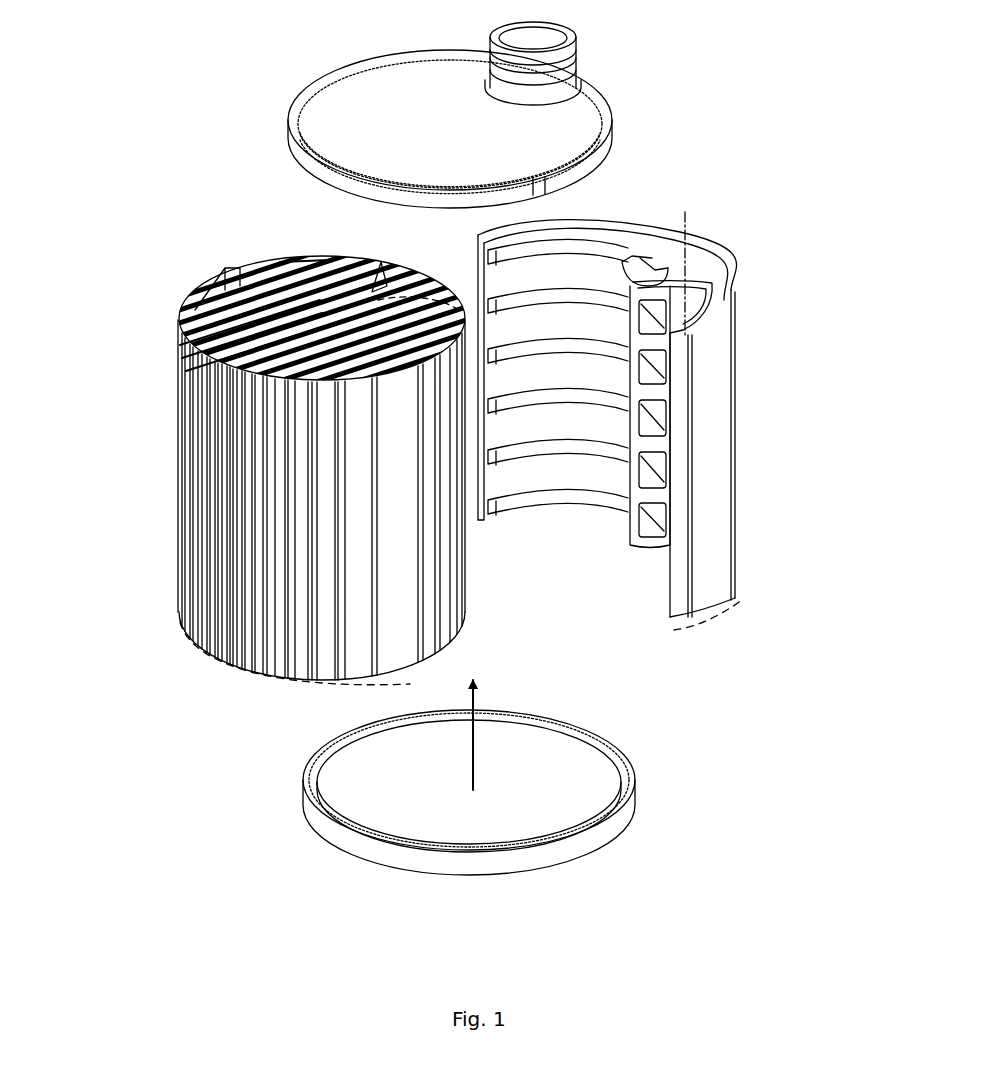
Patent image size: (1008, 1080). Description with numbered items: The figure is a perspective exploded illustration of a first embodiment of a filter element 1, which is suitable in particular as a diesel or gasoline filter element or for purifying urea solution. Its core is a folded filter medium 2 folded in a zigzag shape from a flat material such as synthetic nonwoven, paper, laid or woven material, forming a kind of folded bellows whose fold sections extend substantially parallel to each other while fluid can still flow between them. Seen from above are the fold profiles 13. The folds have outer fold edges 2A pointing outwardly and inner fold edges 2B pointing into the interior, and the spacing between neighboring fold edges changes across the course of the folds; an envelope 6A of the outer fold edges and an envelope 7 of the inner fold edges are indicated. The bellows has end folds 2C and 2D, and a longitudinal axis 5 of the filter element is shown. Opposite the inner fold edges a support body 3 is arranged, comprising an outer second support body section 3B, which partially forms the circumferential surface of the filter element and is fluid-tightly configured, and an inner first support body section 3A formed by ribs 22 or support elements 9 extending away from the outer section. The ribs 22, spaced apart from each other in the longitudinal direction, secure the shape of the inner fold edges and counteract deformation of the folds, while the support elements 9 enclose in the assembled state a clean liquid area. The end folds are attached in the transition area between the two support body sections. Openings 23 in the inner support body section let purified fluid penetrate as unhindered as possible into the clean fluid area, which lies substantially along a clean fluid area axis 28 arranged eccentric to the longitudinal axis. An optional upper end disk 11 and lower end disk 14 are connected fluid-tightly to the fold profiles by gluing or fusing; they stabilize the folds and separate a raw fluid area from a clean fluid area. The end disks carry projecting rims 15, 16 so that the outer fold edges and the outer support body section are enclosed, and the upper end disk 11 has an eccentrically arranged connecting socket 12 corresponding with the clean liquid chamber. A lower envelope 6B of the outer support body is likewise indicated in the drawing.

The filter element 1 is at (102, 429).
The folded filter medium 2 is at (243, 236).
The outer fold edges 2A is at (215, 366).
The inner fold edges 2B is at (380, 268).
The end fold 2C is at (232, 268).
The end fold 2D is at (430, 648).
The support body 3 is at (728, 169).
The first support body section 3A is at (635, 520).
The second support body section 3B is at (738, 268).
The longitudinal axis 5 is at (490, 714).
The envelope of the outer fold edges 6A is at (216, 656).
The bottom edge of shell 6B is at (740, 590).
The envelope of the inner fold edges 7 is at (418, 296).
The support elements 9 is at (648, 258).
The upper end disk 11 is at (318, 92).
The connecting socket 12 is at (578, 50).
The fold profiles 13 is at (300, 268).
The lower end disk 14 is at (574, 762).
The projecting rim 15 is at (608, 152).
The projecting rim 16 is at (622, 818).
The ribs 22 is at (557, 452).
The openings 23 is at (660, 428).
The clean fluid area axis 28 is at (688, 222).